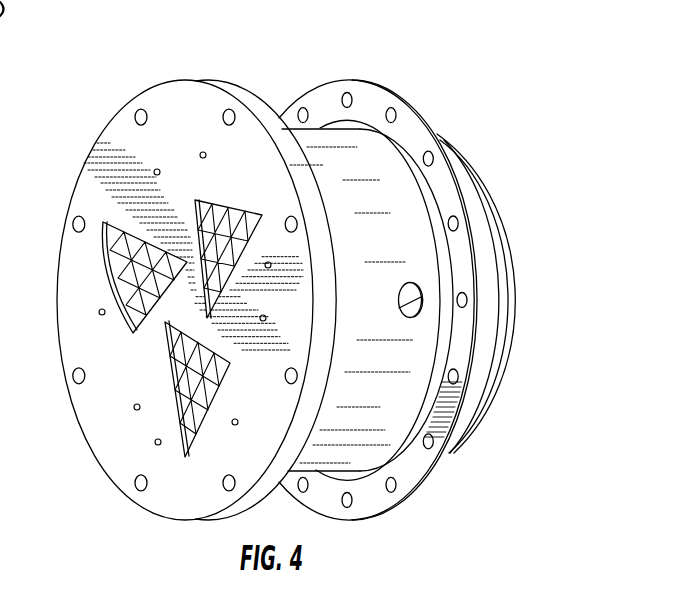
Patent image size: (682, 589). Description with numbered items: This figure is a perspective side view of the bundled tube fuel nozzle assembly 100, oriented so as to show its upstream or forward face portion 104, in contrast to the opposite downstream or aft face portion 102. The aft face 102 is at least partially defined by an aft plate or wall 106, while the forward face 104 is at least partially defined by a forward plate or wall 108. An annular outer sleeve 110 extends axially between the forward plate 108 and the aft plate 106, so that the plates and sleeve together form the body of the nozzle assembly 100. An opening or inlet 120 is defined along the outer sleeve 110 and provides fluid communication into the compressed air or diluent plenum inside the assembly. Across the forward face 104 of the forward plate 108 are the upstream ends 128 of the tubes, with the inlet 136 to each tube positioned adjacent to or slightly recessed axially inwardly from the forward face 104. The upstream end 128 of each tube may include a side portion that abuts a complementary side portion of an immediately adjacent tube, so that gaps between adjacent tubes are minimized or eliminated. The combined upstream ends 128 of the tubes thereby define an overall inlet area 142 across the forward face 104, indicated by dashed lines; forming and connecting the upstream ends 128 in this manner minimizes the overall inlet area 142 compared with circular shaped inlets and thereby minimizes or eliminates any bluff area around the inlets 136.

The fuel nozzle assembly 100 is at (394, 52).
The aft face portion 102 is at (515, 283).
The forward face portion 104 is at (97, 202).
The aft plate 106 is at (483, 185).
The forward plate 108 is at (223, 83).
The annular outer sleeve 110 is at (326, 145).
The inlet 120 is at (398, 314).
The upstream end 128 is at (178, 420).
The inlet 136 is at (234, 356).
The overall inlet area 142 is at (166, 397).